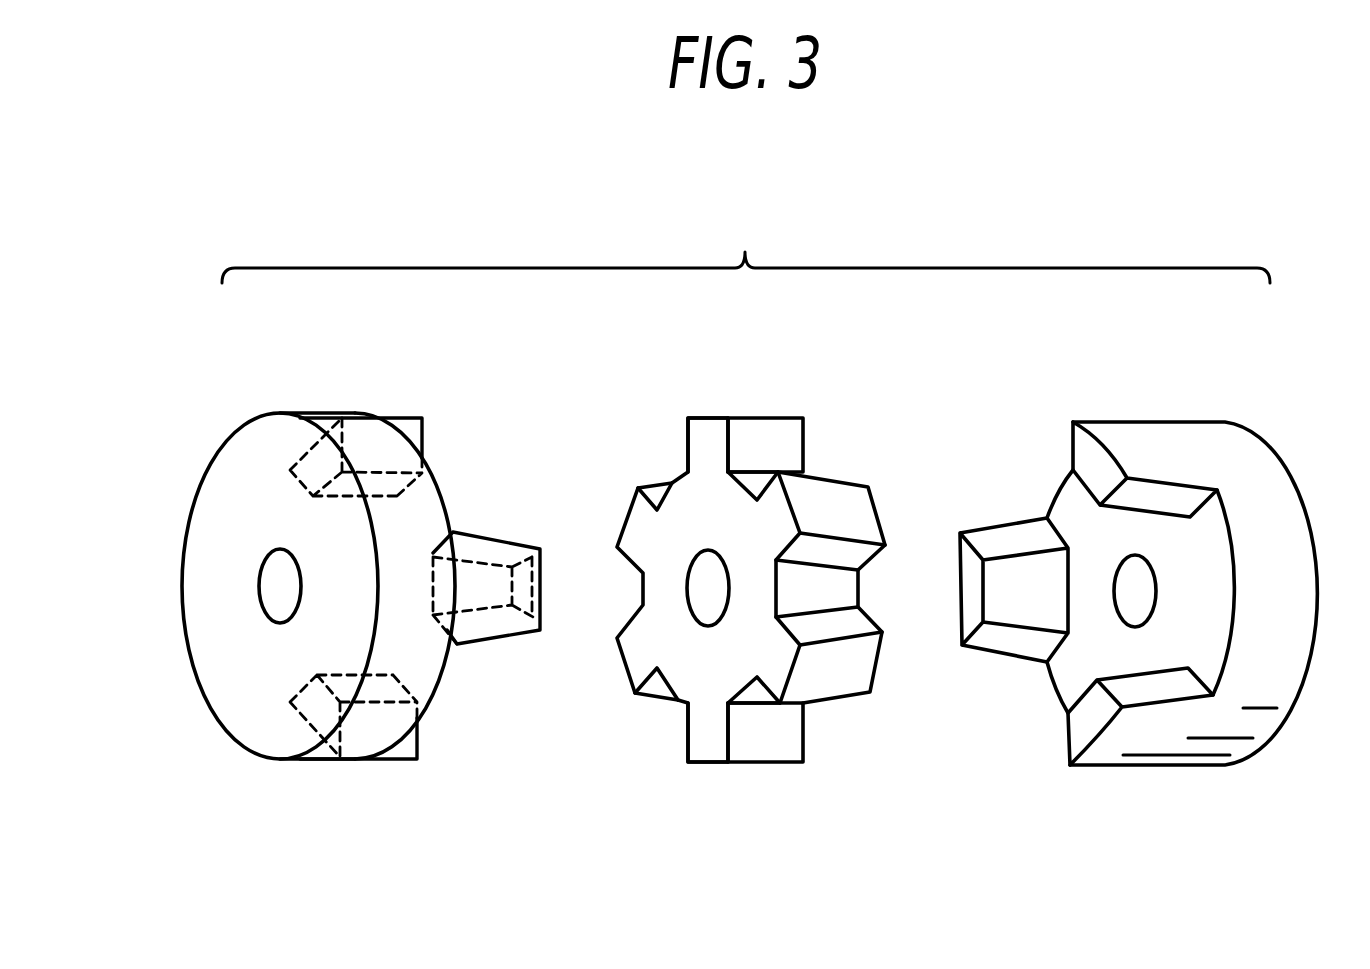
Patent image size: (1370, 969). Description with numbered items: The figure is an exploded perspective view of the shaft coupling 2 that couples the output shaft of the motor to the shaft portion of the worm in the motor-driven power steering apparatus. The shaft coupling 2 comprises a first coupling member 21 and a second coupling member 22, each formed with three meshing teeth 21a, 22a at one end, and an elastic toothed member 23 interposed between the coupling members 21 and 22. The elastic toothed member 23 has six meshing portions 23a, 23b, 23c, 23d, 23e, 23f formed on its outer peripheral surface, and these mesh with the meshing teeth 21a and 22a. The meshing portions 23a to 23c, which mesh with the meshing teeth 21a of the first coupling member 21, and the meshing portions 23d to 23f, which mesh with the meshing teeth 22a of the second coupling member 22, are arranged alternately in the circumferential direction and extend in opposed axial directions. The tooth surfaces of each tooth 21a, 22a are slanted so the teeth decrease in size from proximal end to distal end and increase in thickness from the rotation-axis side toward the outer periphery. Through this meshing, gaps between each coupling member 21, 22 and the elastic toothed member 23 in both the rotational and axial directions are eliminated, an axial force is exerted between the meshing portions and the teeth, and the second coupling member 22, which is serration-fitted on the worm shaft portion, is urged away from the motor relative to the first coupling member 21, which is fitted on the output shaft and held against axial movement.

The shaft coupling 2 is at (746, 245).
The first coupling member 21 is at (304, 413).
The meshing teeth 21a is at (487, 535).
The second coupling member 22 is at (1171, 420).
The meshing teeth 22a is at (997, 535).
The elastic toothed member 23 is at (740, 418).
The meshing portion 23a is at (860, 590).
The meshing portion 23b is at (687, 732).
The meshing portion 23c is at (688, 447).
The meshing portion 23d is at (762, 742).
The meshing portion 23e is at (625, 624).
The meshing portion 23f is at (755, 482).